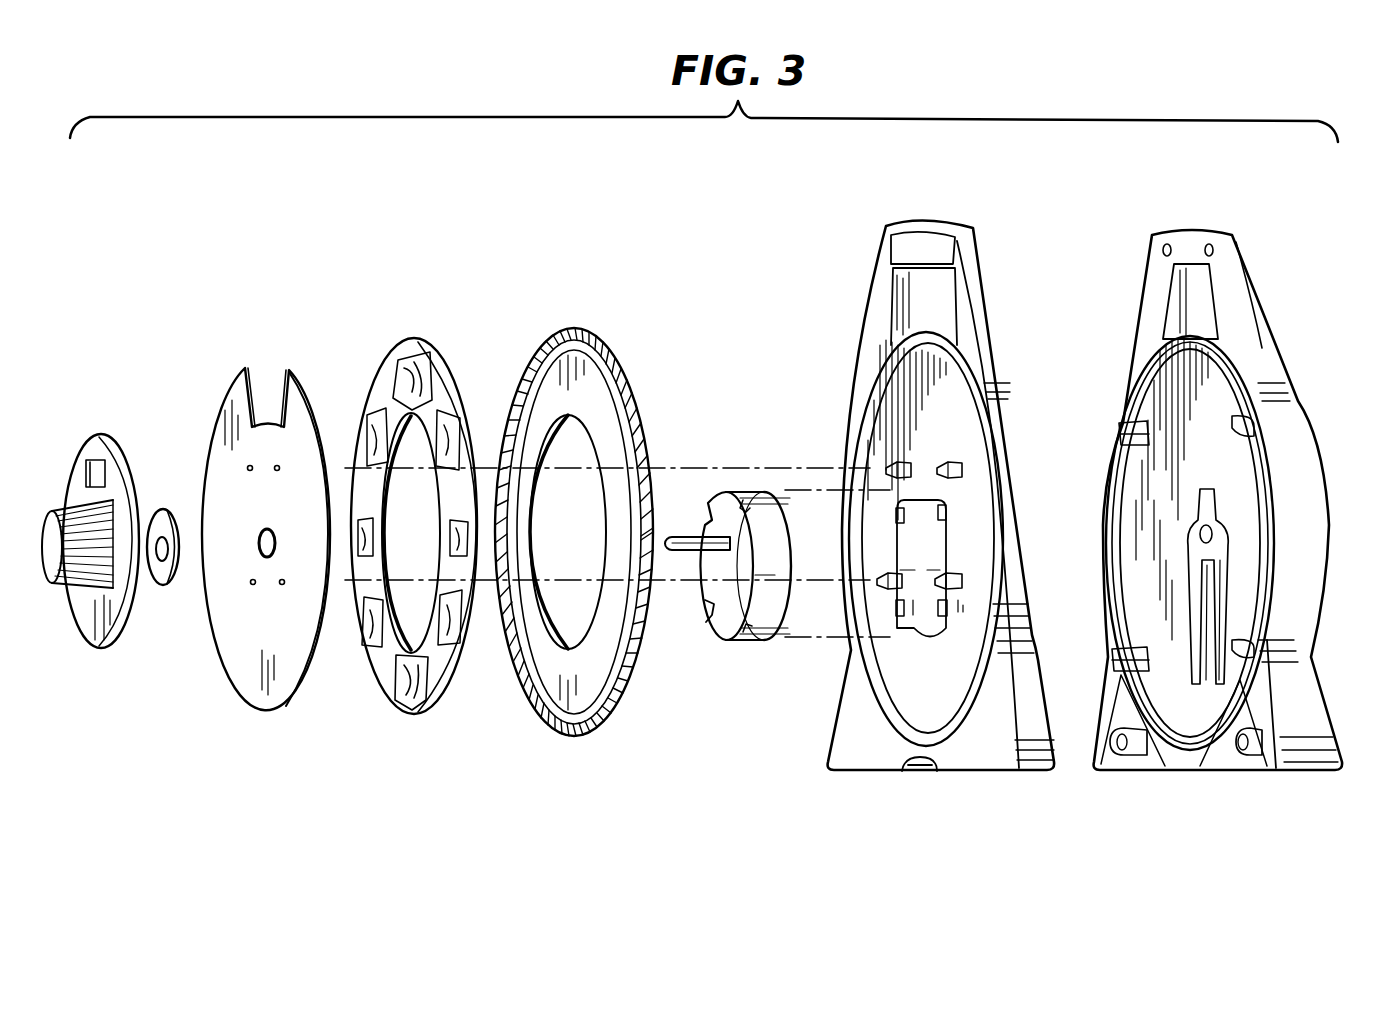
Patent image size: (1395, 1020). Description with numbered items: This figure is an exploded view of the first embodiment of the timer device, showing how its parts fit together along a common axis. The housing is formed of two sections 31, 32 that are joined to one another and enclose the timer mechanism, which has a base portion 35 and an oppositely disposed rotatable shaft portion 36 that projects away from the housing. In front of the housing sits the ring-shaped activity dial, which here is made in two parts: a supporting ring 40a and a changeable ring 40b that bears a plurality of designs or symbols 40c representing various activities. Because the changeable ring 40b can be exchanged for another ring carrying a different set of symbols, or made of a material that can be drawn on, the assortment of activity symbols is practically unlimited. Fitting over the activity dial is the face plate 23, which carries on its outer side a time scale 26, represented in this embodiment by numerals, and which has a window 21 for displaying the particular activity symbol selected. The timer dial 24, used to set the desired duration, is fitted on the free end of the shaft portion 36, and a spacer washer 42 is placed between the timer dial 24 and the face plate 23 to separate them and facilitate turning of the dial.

The window 21 is at (257, 523).
The face plate 23 is at (283, 665).
The timer dial 24 is at (97, 632).
The time scale 26 is at (250, 612).
The housing section 31 is at (868, 760).
The housing section 32 is at (1303, 608).
The base portion 35 is at (752, 492).
The shaft portion 36 is at (683, 535).
The supporting ring 40a is at (570, 735).
The changeable ring 40b is at (413, 527).
The symbols 40c is at (412, 338).
The spacer washer 42 is at (165, 506).